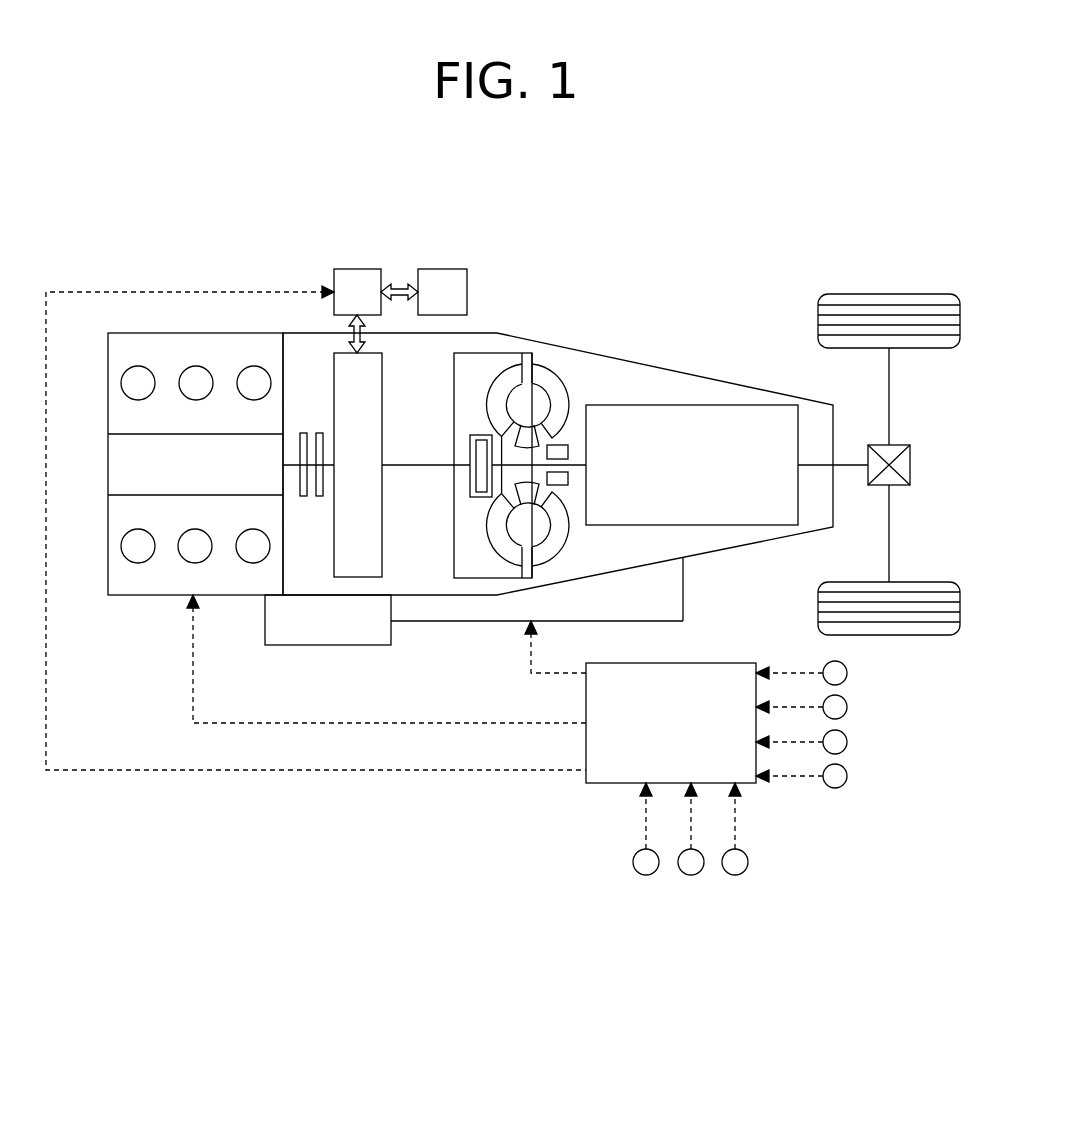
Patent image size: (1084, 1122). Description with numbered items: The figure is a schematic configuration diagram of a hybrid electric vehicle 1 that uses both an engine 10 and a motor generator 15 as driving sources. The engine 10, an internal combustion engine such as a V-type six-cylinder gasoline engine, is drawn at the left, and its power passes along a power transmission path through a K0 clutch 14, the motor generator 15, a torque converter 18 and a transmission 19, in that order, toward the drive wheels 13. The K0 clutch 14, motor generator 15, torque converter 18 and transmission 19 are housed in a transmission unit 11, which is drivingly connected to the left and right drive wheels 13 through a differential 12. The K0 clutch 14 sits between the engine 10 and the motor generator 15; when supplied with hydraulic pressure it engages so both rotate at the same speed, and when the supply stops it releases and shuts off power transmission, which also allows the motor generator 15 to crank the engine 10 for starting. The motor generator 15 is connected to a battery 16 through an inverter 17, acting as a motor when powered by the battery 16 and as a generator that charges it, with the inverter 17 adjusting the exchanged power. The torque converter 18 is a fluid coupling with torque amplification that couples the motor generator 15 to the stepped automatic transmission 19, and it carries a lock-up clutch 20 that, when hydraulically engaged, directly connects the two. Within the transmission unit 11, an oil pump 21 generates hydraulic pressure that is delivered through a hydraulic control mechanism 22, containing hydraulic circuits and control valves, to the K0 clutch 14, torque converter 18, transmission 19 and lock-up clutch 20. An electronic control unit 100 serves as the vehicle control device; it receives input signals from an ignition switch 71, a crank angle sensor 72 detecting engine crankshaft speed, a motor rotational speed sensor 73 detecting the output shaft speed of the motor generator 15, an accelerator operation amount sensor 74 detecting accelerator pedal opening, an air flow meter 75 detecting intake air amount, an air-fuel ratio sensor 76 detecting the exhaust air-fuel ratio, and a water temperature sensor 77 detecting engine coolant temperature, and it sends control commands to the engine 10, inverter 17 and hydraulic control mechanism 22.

The hybrid electric vehicle 1 is at (618, 313).
The engine 10 is at (231, 597).
The transmission unit 11 is at (757, 548).
The differential 12 is at (895, 444).
The drive wheels 13 is at (940, 350).
The K0 clutch 14 is at (319, 430).
The motor generator 15 is at (382, 385).
The battery 16 is at (467, 292).
The inverter 17 is at (333, 300).
The torque converter 18 is at (568, 376).
The transmission 19 is at (614, 527).
The lock-up clutch 20 is at (469, 448).
The oil pump 21 is at (349, 646).
The hydraulic control mechanism 22 is at (454, 623).
The electronic control unit 100 is at (700, 663).
The ignition switch 71 is at (847, 672).
The crank angle sensor 72 is at (847, 706).
The motor rotational speed sensor 73 is at (847, 741).
The accelerator operation amount sensor 74 is at (847, 775).
The air flow meter 75 is at (736, 876).
The air-fuel ratio sensor 76 is at (692, 876).
The water temperature sensor 77 is at (648, 876).